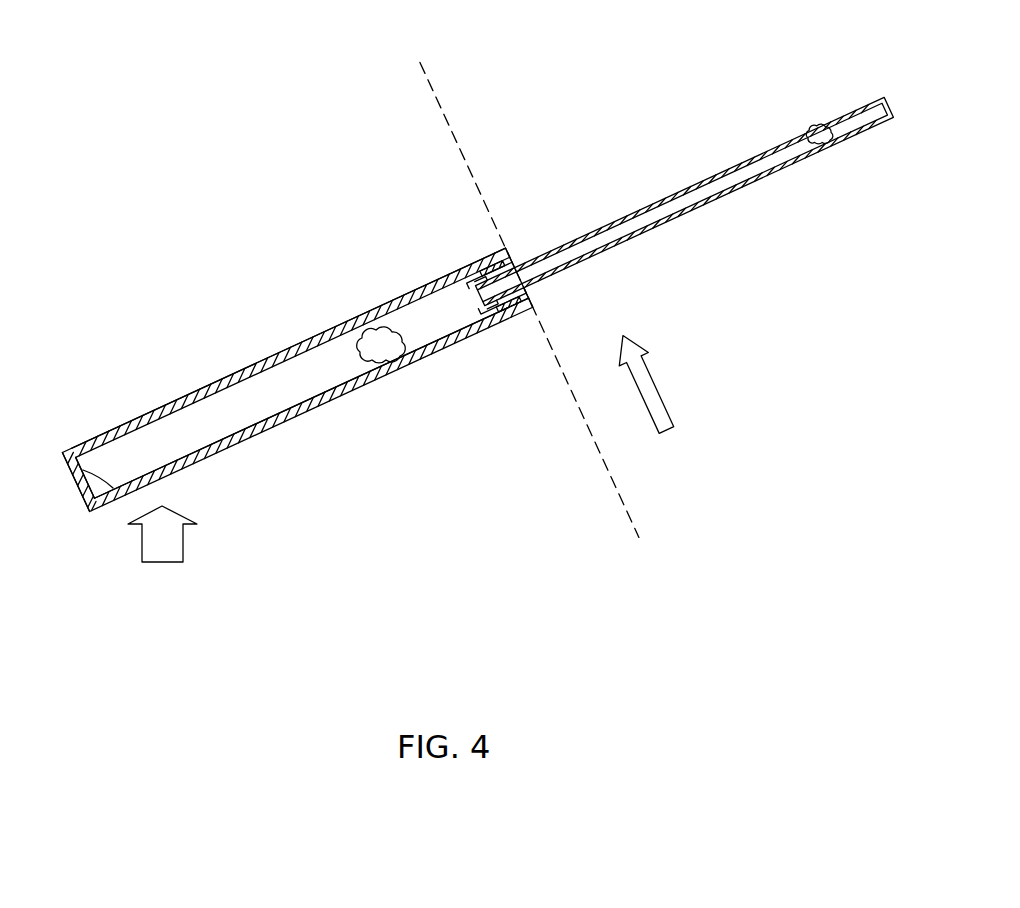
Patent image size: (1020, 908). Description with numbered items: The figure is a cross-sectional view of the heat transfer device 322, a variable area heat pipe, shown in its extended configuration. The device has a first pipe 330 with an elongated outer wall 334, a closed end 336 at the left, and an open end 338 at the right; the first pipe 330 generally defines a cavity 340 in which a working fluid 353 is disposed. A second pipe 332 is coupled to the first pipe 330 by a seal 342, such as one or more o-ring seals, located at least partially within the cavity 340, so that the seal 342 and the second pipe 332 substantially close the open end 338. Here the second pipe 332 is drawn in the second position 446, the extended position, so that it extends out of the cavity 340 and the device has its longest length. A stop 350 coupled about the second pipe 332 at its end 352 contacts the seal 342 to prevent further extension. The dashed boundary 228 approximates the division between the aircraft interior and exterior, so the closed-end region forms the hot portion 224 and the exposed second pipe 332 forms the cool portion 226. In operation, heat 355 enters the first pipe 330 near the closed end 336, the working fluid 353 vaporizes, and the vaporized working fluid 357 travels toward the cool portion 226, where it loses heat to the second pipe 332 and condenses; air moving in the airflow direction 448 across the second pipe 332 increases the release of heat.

The hot portion 224 is at (383, 466).
The cool portion 226 is at (607, 133).
The boundary 228 is at (432, 84).
The heat transfer device 322 is at (283, 160).
The first pipe 330 is at (258, 363).
The second pipe 332 is at (645, 233).
The elongated outer wall 334 is at (162, 407).
The closed end 336 is at (78, 497).
The open end 338 is at (484, 257).
The cavity 340 is at (283, 411).
The seal 342 is at (514, 309).
The stop 350 is at (483, 320).
The end 352 is at (467, 304).
The working fluid 353 is at (99, 489).
The heat 355 is at (172, 541).
The vaporized working fluid 357 is at (358, 355).
The second position 446 is at (273, 315).
The airflow direction 448 is at (643, 398).